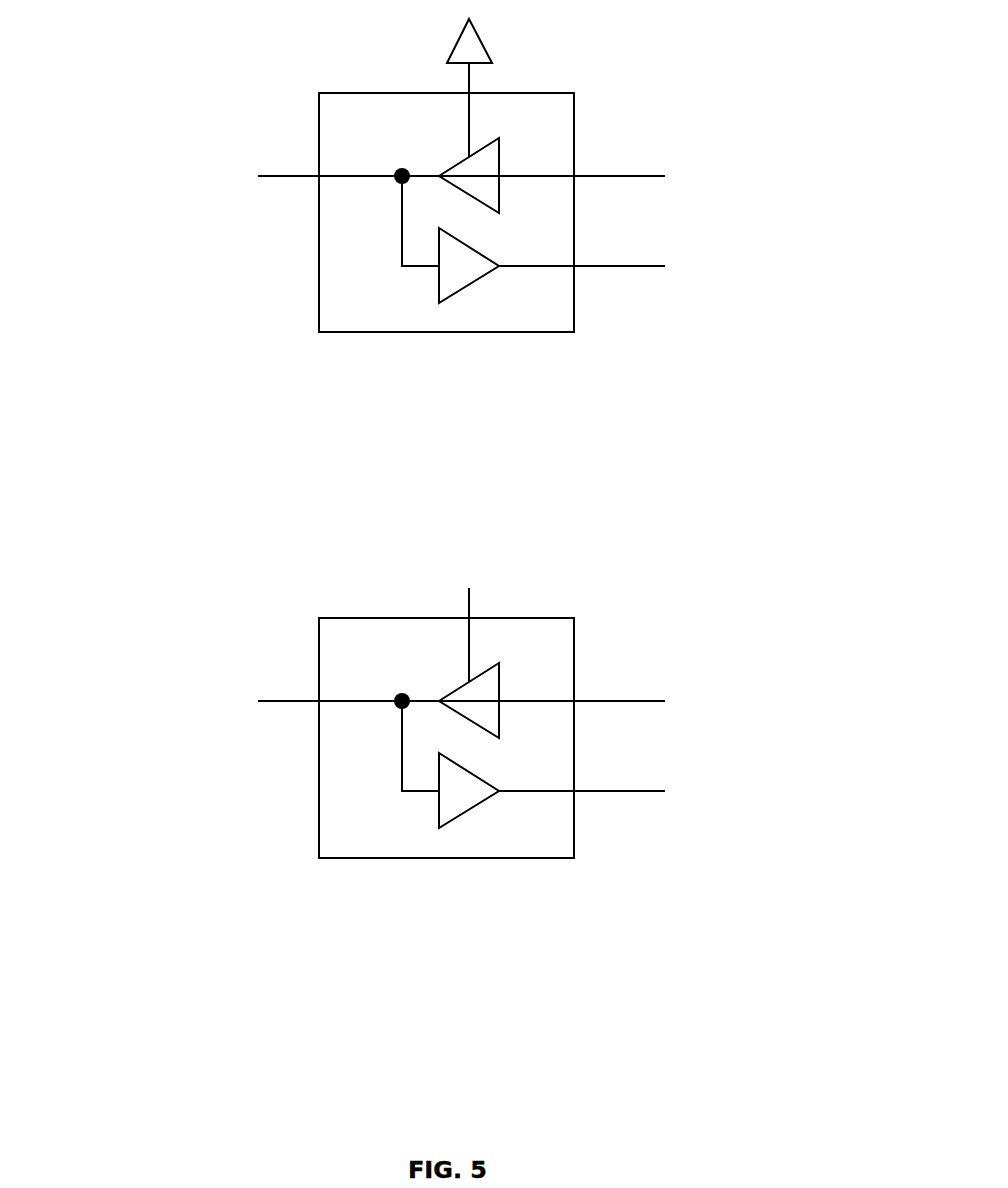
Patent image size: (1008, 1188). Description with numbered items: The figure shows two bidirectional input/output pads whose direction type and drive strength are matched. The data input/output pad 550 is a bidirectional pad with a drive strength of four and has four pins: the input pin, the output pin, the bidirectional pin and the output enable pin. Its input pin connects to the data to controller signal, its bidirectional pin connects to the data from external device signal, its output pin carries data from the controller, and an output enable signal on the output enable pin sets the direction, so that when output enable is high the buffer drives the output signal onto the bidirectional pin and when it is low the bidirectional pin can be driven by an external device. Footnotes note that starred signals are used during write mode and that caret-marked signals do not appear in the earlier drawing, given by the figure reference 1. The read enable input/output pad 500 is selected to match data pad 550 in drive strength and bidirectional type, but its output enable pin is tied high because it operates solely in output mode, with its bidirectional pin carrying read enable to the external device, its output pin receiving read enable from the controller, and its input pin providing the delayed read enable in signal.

The read enable I/O pad 500 is at (318, 213).
The data I/O pad 550 is at (318, 738).
The Figure 1 (footnote reference) 1 is at (729, 1015).